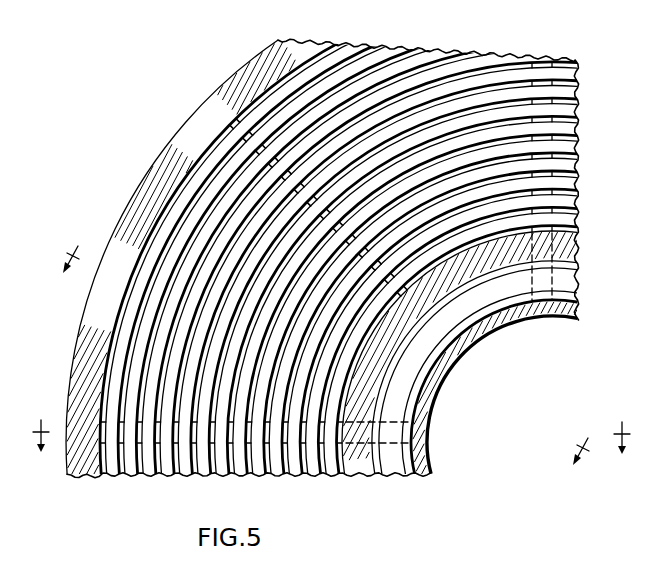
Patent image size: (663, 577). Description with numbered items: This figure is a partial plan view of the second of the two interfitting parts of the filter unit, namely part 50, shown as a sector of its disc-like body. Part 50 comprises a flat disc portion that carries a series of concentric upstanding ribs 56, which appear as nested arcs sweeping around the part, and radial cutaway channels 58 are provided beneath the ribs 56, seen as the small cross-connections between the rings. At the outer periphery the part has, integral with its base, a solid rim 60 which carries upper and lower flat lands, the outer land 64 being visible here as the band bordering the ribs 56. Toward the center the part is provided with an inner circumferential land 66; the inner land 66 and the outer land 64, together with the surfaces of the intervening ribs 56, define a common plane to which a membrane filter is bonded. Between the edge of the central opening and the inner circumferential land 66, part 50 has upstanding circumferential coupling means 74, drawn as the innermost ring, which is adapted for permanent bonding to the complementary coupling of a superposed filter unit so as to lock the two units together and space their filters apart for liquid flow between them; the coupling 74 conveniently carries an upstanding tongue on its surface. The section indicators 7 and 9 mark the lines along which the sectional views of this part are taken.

The part 50 is at (440, 44).
The concentric upstanding ribs 56 is at (381, 62).
The radial cutaway channels 58 is at (247, 147).
The solid rim 60 is at (143, 173).
The outer land 64 is at (238, 83).
The inner circumferential land 66 is at (576, 258).
The circumferential coupling means 74 is at (585, 292).
The section line 7- 7 is at (331, 427).
The section line 9- 9 is at (328, 344).